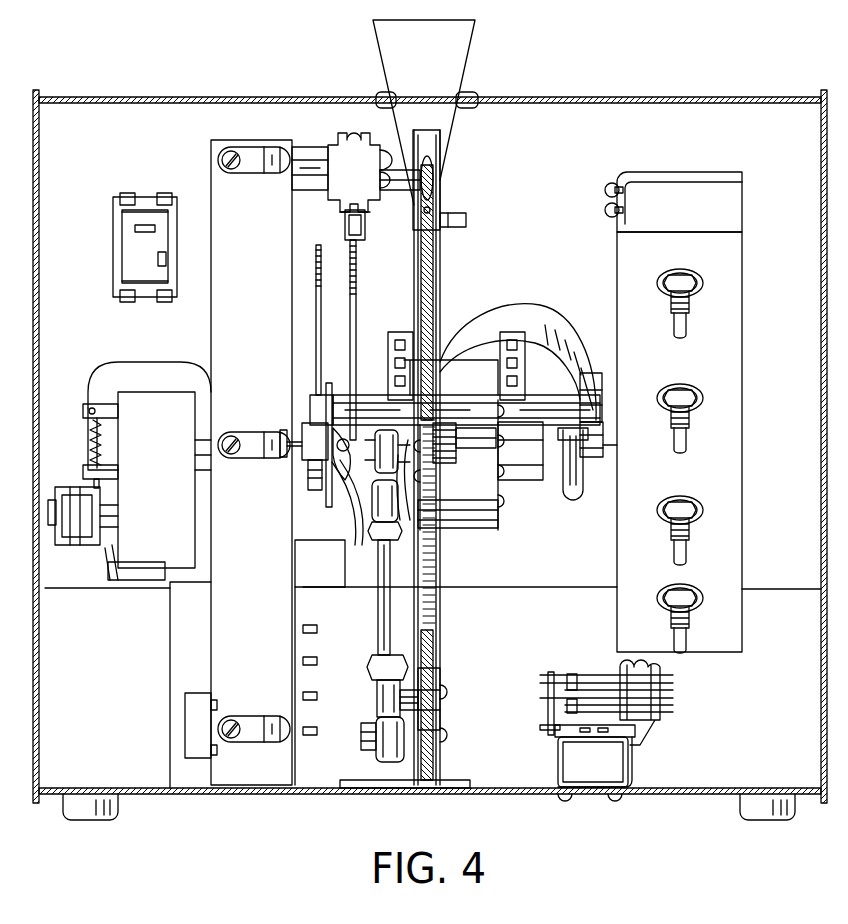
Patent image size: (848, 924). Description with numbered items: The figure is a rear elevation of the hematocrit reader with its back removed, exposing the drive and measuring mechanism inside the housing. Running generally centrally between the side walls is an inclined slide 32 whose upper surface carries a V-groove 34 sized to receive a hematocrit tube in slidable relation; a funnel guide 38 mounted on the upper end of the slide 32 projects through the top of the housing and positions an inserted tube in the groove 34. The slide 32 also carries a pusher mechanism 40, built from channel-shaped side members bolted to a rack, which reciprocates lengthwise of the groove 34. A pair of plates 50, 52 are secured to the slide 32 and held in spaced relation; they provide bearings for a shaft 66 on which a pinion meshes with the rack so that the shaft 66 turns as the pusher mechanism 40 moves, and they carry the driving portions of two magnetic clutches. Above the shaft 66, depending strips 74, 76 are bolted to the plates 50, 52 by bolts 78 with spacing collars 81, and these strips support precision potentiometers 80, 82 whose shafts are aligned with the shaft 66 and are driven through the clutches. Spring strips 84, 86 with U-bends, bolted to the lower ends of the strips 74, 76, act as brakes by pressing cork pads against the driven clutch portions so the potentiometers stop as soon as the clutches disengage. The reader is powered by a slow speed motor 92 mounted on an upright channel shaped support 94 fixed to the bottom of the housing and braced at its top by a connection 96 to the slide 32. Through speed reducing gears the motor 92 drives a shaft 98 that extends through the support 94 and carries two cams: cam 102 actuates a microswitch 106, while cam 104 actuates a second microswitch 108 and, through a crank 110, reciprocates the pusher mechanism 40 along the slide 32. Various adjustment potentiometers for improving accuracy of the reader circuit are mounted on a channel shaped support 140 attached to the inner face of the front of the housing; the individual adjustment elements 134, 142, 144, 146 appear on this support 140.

The inclined slide 32 is at (418, 280).
The V-groove 34 is at (430, 262).
The funnel guide 38 is at (453, 70).
The pusher mechanism 40 is at (435, 687).
The plate 50 is at (410, 495).
The plate 52 is at (500, 487).
The shaft 66 is at (470, 437).
The depending strip 74 is at (311, 437).
The depending strip 76 is at (573, 355).
The bolt 78 is at (316, 407).
The precision potentiometer 80 is at (312, 447).
The spacing collar 81 is at (370, 403).
The precision potentiometer 82 is at (598, 443).
The spring strip 84 is at (332, 462).
The spring strip 86 is at (598, 490).
The slow speed motor 92 is at (137, 407).
The channel shaped support 94 is at (227, 198).
The connection 96 is at (308, 178).
The shaft 98 is at (306, 355).
The cam 102 is at (316, 260).
The cam 104 is at (355, 298).
The microswitch 106 is at (335, 587).
The second microswitch 108 is at (333, 153).
The crank 110 is at (390, 622).
The terminal 134 is at (700, 598).
The channel shaped support 140 is at (660, 200).
The terminal 142 is at (700, 508).
The terminal 144 is at (700, 396).
The terminal 146 is at (690, 283).